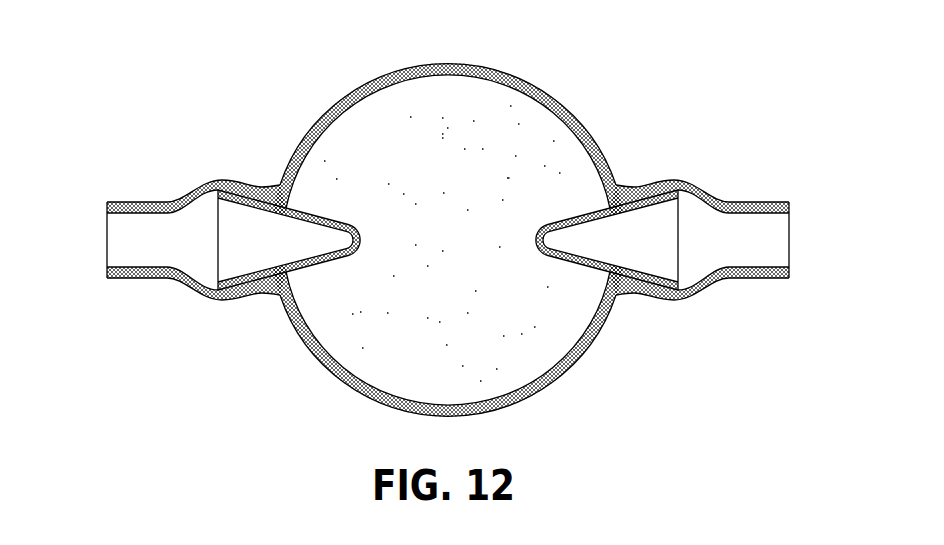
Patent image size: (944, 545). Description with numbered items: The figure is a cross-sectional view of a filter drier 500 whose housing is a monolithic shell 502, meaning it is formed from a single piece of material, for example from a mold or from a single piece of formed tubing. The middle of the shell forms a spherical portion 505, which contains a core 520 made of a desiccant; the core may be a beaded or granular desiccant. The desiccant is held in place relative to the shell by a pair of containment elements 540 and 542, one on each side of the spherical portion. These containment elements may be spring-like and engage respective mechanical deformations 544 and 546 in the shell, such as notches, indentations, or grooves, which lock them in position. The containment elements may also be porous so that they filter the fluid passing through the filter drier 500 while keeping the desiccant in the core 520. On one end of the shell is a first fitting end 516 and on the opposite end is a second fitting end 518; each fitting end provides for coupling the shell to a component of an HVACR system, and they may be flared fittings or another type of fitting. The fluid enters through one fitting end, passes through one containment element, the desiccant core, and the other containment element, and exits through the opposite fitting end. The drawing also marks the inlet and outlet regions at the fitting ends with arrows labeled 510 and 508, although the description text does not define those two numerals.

The filter drier 500 is at (644, 79).
The monolithic shell 502 is at (532, 88).
The spherical portion 505 is at (322, 388).
The core 520 is at (385, 115).
The second fitting end 518 is at (135, 202).
The inlet 510 is at (98, 238).
The mechanical deformation 546 is at (270, 183).
The containment element 542 is at (305, 267).
The first fitting end 516 is at (742, 203).
The outlet 508 is at (798, 238).
The mechanical deformation 544 is at (630, 185).
The containment element 540 is at (590, 267).